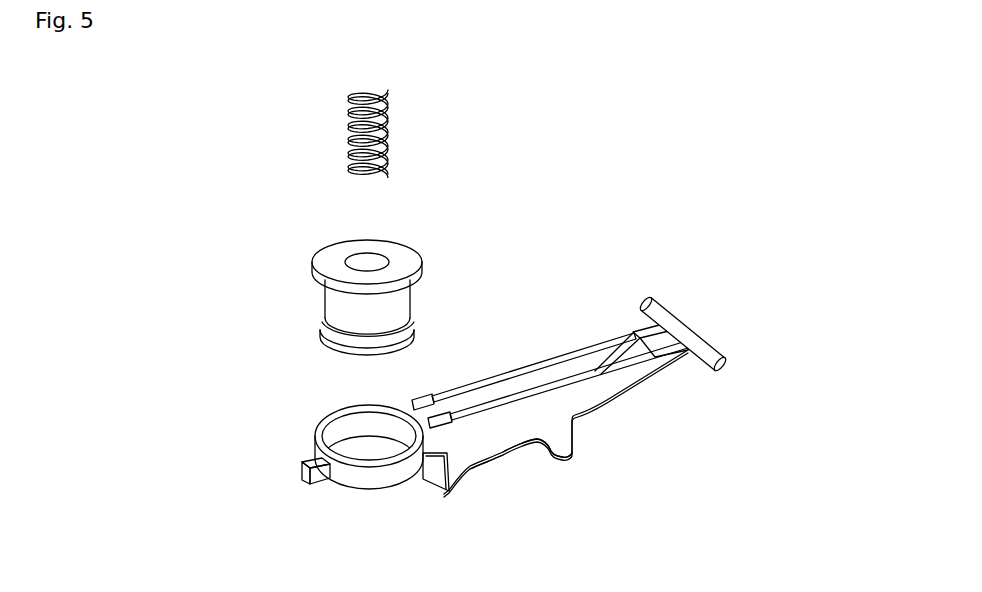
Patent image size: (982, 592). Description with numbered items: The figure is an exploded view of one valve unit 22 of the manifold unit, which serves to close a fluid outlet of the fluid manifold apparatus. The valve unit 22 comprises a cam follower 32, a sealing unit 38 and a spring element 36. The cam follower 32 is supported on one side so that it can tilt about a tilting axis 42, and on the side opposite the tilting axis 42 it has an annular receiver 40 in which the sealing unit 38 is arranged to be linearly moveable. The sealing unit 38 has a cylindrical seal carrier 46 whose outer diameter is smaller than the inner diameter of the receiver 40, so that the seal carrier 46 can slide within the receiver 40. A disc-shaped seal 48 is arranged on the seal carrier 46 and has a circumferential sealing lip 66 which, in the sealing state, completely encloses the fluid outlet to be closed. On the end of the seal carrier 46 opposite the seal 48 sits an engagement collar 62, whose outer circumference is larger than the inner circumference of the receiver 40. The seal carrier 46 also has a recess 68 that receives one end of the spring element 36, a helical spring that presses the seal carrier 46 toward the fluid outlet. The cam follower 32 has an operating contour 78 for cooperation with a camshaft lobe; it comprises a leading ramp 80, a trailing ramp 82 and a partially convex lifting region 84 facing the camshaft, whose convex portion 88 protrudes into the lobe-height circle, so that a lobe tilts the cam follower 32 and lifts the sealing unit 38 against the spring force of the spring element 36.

The valve unit 22 is at (748, 113).
The cam follower 32 is at (607, 383).
The spring element 36 is at (353, 120).
The sealing unit 38 is at (233, 257).
The receiver 40 is at (347, 477).
The tilting axis 42 is at (703, 347).
The seal carrier 46 is at (345, 310).
The seal 48 is at (420, 317).
The engagement collar 62 is at (423, 283).
The sealing lip 66 is at (333, 340).
The recess 68 is at (365, 258).
The operating contour 78 is at (533, 495).
The leading ramp 80 is at (550, 460).
The trailing ramp 82 is at (459, 479).
The lifting region 84 is at (503, 463).
The convex portion 88 is at (520, 450).